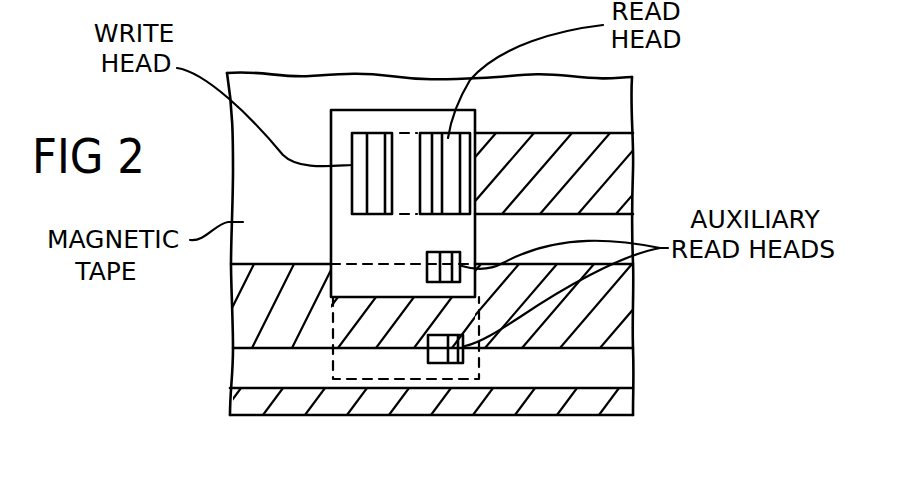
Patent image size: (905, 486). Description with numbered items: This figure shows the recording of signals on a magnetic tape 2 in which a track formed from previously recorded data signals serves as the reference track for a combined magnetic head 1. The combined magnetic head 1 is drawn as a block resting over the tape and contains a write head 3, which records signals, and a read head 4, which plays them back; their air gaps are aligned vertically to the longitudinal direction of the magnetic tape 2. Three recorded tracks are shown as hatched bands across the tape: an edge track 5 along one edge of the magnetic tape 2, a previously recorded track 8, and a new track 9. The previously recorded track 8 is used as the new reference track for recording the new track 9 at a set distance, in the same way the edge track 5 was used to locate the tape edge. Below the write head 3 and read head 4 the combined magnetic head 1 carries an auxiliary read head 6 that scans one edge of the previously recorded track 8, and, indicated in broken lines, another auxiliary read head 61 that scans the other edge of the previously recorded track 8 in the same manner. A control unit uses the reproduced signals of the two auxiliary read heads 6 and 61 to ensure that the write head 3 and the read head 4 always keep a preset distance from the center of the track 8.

The combined magnetic head 1 is at (333, 118).
The magnetic tape 2 is at (552, 96).
The write head 3 is at (365, 132).
The read head 4 is at (432, 132).
The edge track 5 is at (573, 405).
The auxiliary read head 6 is at (462, 264).
The auxiliary read head 61 is at (462, 363).
The previously recorded track 8 is at (616, 312).
The new track 9 is at (620, 181).